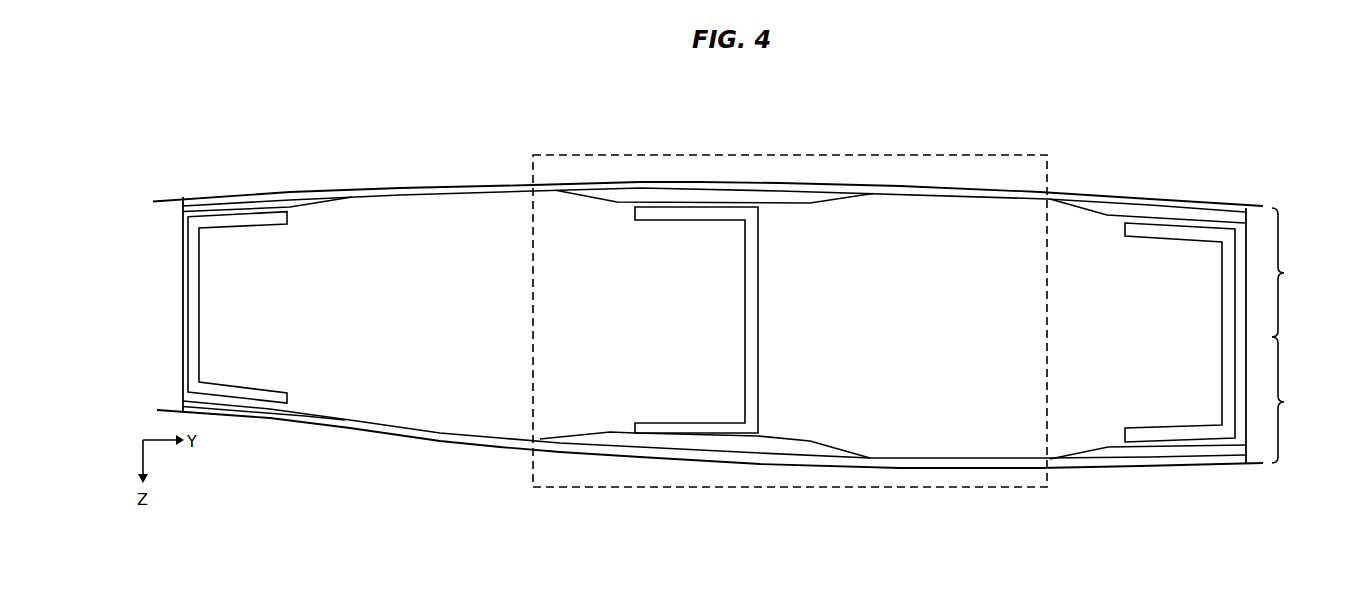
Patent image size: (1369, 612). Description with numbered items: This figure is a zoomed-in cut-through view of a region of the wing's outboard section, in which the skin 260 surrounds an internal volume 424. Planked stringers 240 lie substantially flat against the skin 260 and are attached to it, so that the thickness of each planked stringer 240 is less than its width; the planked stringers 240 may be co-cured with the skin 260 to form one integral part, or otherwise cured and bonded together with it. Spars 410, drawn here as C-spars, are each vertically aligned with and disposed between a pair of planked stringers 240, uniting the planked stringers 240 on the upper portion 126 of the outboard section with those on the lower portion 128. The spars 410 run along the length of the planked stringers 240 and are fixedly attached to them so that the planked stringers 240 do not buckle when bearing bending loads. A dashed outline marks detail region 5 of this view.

The internal volume 424 is at (440, 206).
The skin 260 is at (1159, 193).
The planked stringers 240 is at (332, 206).
The spars 410 is at (200, 287).
The detail region shown in FIG. 5 is at (803, 153).
The upper portion 126 is at (1297, 272).
The lower portion 128 is at (1297, 400).